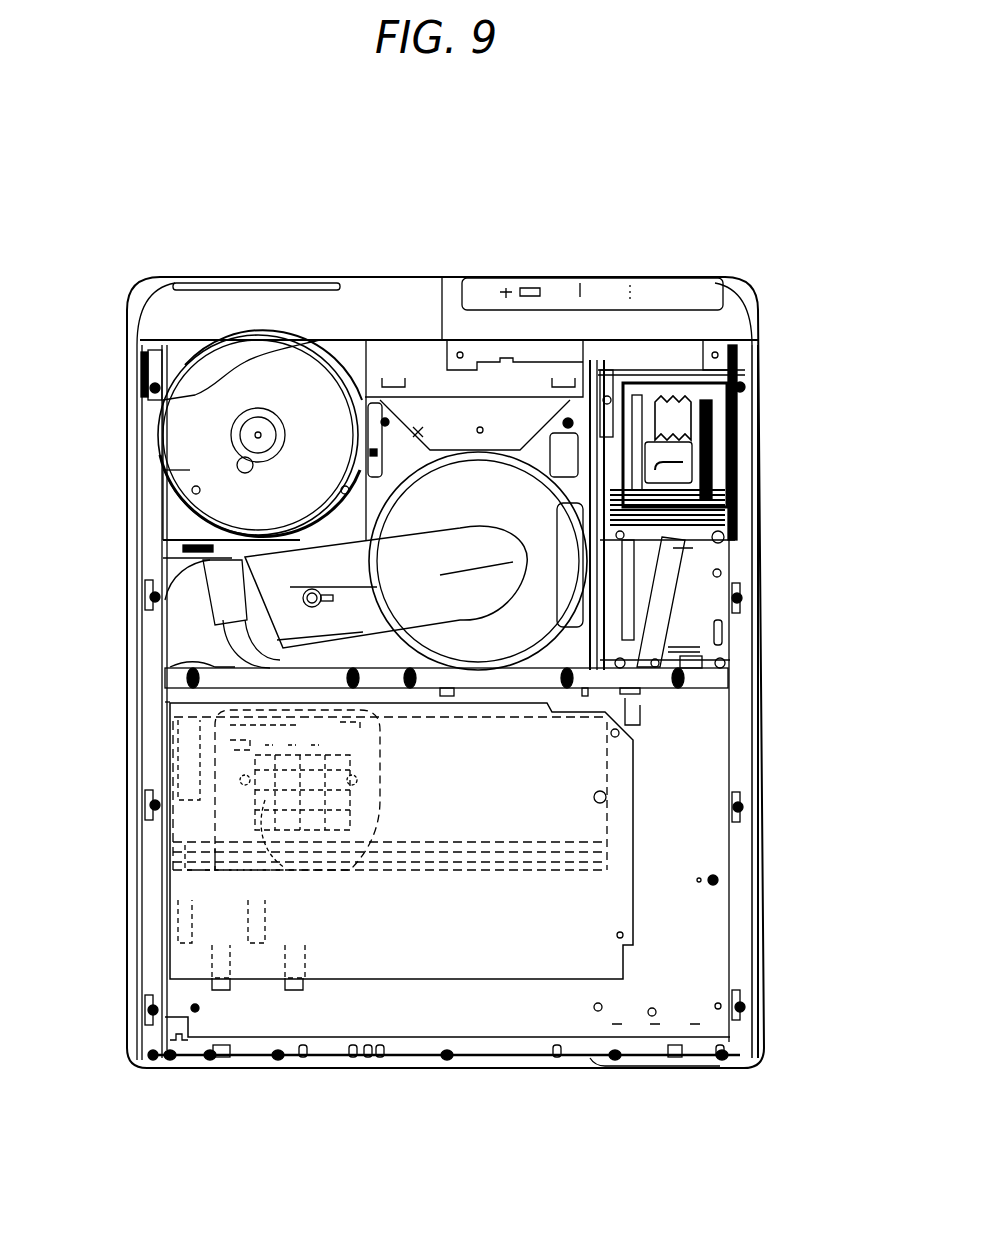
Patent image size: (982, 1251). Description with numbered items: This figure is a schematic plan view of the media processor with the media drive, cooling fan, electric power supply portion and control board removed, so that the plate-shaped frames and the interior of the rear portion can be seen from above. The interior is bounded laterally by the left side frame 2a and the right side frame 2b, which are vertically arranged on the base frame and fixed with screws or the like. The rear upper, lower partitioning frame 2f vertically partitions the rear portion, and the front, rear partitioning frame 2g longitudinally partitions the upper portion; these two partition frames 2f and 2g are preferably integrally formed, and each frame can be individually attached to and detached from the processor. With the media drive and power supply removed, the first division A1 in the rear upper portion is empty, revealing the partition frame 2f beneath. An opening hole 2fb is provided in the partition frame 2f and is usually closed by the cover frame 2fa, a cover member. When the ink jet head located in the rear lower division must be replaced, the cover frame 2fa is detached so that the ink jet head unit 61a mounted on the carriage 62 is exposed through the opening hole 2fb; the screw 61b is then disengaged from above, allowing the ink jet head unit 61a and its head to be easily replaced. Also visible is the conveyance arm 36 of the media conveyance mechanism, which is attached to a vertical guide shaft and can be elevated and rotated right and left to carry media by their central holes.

The conveyance arm 36 is at (480, 537).
The front, rear partitioning frame 2g is at (177, 670).
The opening hole 2fb is at (606, 797).
The right side frame 2b is at (742, 862).
The left side frame 2a is at (153, 877).
The ink jet head unit 61a is at (385, 760).
The carriage 62 is at (385, 790).
The screw 61b is at (313, 873).
The rear upper, lower partitioning frame 2f is at (404, 1017).
The cover frame 2fa is at (508, 963).
The first division A1 is at (668, 985).